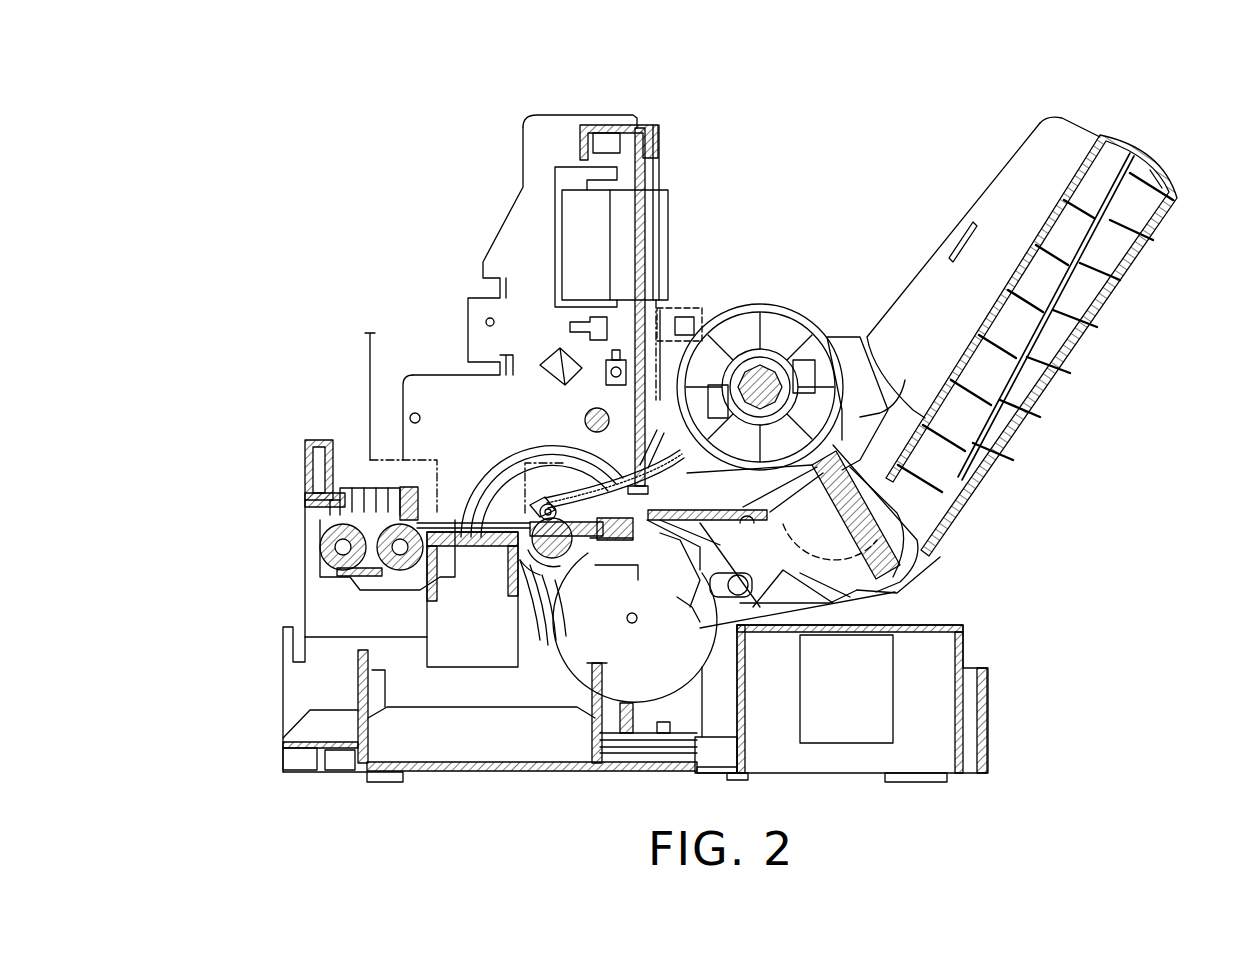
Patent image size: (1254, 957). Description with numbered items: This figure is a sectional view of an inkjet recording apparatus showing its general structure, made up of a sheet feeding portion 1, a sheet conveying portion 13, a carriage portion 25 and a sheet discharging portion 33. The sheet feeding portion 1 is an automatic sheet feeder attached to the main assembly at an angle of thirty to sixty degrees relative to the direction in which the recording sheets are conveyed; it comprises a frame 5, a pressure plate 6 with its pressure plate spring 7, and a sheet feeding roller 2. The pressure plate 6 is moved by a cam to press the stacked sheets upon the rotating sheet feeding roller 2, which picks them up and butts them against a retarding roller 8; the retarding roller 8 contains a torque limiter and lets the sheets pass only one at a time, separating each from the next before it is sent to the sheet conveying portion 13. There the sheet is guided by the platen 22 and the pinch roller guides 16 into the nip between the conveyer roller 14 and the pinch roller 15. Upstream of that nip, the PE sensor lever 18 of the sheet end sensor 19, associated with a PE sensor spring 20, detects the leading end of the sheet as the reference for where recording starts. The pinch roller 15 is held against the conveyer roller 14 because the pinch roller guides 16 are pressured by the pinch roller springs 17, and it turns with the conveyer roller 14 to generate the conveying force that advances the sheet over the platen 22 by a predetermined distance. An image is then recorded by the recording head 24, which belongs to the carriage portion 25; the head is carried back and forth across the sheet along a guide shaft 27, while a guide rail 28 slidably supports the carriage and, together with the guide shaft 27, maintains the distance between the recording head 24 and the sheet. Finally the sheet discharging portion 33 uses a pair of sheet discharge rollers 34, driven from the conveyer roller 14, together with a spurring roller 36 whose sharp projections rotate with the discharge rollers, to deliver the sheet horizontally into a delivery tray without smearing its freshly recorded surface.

The sheet feeding portion 1 is at (1013, 332).
The sheet feeding roller 2 is at (793, 310).
The frame 5 is at (1160, 214).
The pressure plate 6 is at (1020, 272).
The pressure plate spring 7 is at (987, 410).
The retarding roller 8 is at (902, 598).
The sheet conveying portion 13 is at (510, 490).
The conveyer roller 14 is at (548, 600).
The pinch roller 15 is at (540, 484).
The pinch roller guides 16 is at (565, 490).
The pinch roller springs 17 is at (610, 480).
The PE sensor lever 18 is at (690, 320).
The sheet end sensor (PE sensor) 19 is at (664, 308).
The PE sensor spring 20 is at (684, 452).
The platen 22 is at (498, 540).
The recording head 24 is at (356, 382).
The carriage portion 25 is at (388, 300).
The guide shaft 27 is at (598, 408).
The guide rail 28 is at (582, 140).
The sheet discharging portion 33 is at (293, 488).
The sheet discharge rollers 34 is at (390, 580).
The spurring roller 36 is at (378, 523).